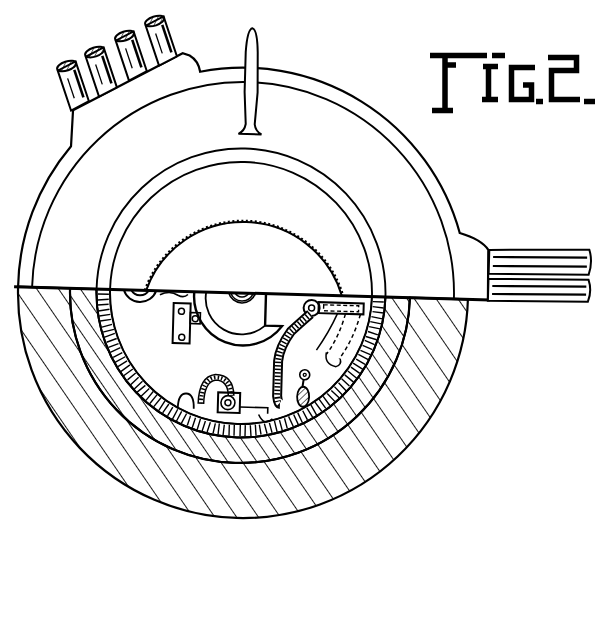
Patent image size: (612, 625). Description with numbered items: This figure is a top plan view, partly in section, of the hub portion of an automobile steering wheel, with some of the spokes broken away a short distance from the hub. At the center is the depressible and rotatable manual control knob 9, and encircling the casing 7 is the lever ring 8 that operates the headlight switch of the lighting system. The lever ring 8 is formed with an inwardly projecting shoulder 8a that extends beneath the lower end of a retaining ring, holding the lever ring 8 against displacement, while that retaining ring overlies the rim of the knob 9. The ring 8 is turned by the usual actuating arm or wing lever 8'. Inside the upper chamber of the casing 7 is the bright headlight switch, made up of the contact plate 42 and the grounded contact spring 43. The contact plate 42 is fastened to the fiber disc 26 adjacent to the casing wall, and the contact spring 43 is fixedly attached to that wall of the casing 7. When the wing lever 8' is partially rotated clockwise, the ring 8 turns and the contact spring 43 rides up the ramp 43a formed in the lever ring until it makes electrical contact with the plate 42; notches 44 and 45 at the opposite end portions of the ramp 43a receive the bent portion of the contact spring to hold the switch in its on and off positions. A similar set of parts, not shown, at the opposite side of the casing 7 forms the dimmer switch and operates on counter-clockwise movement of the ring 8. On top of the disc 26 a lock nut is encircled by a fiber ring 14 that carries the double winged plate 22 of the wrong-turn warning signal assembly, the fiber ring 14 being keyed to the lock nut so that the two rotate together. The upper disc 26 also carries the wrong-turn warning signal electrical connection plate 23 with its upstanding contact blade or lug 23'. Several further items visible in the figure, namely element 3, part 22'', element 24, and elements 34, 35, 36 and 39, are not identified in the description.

The housing 3 is at (446, 362).
The casing 7 is at (386, 326).
The lever ring 8 is at (253, 256).
The actuating arm or lever 8' is at (266, 81).
The inwardly projecting shoulder 8a is at (0, 104).
The manual control knob 9 is at (281, 237).
The fiber ring 14 is at (245, 350).
The double winged plate 22 is at (166, 334).
The spring arch 22'' is at (182, 378).
The wrong-turn warning signal electrical connection plate 23 is at (193, 337).
The upstanding contact blade or lug 23' is at (184, 279).
The bearing 24 is at (159, 314).
The disc 26 is at (149, 373).
The element 34 is at (9, 204).
The element 35 is at (11, 188).
The flexible spring 36 is at (330, 362).
The element 39 is at (10, 221).
The contact plate 42 is at (252, 402).
The grounded contact spring 43 is at (324, 438).
The ramp 43a is at (250, 462).
The notch 44 is at (375, 459).
The notch 45 is at (272, 424).